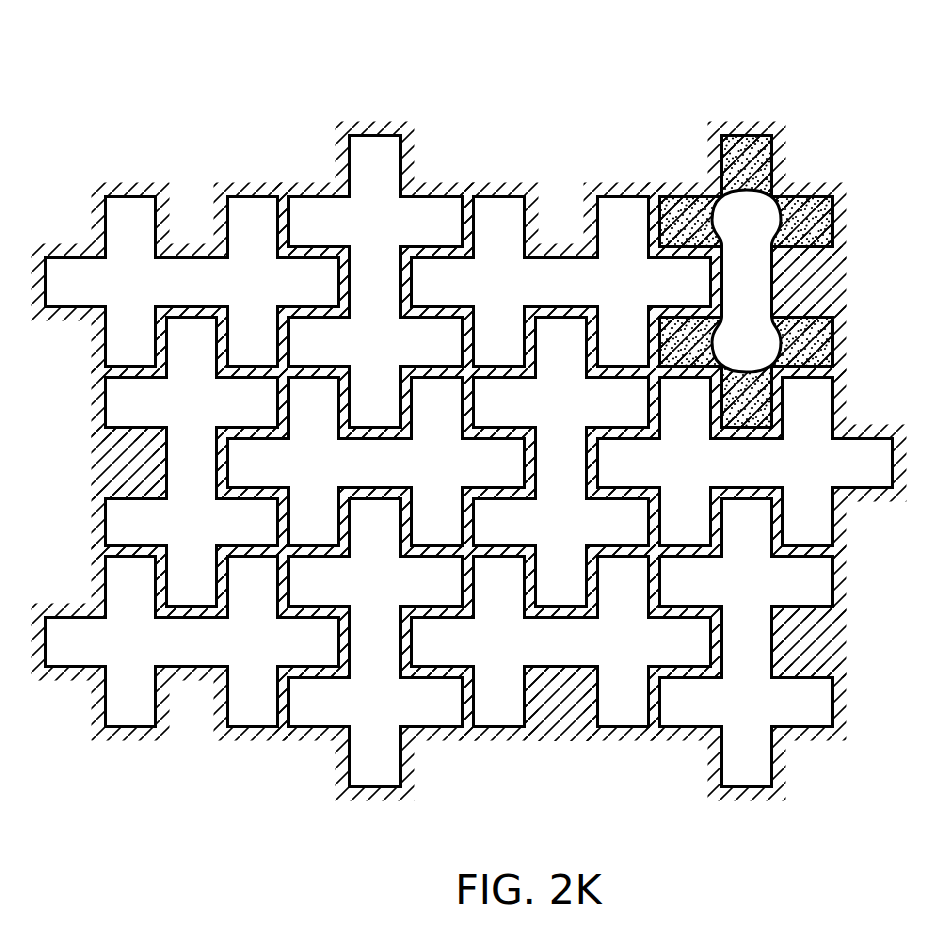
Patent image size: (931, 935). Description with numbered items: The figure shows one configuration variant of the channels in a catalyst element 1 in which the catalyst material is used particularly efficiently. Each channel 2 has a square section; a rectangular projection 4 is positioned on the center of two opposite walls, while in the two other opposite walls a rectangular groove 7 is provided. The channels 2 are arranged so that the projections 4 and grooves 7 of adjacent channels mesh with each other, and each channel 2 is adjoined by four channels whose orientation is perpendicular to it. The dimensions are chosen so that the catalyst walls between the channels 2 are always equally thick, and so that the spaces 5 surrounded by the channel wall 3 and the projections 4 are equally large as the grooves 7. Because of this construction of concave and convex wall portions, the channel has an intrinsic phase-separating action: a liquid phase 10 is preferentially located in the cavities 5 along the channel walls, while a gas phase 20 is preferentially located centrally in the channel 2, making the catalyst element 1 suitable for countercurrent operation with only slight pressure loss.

The catalyst element 1 is at (469, 398).
The channel 2 is at (760, 654).
The channel wall 3 is at (832, 405).
The projection 4 is at (678, 678).
The space 5 is at (693, 422).
The groove 7 is at (759, 532).
The liquid phase 10 is at (808, 210).
The gas phase 20 is at (731, 284).